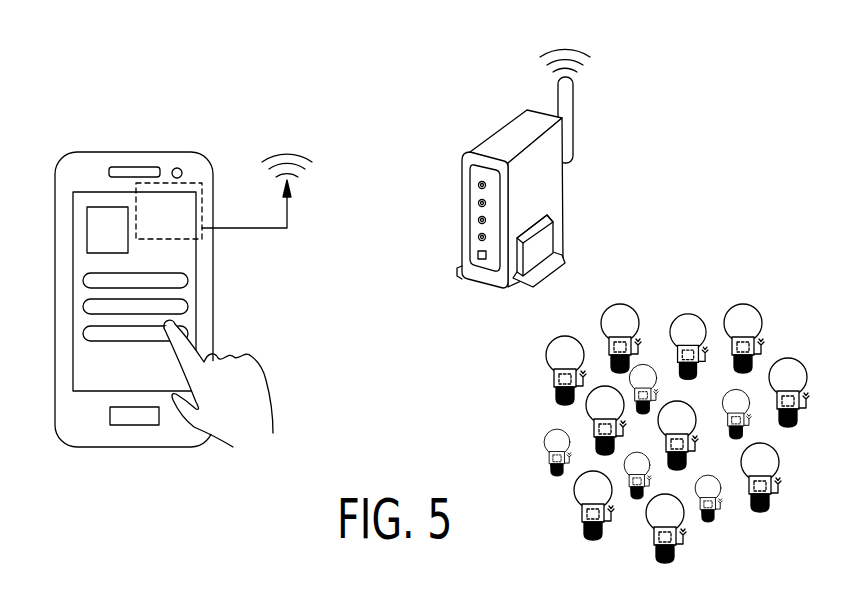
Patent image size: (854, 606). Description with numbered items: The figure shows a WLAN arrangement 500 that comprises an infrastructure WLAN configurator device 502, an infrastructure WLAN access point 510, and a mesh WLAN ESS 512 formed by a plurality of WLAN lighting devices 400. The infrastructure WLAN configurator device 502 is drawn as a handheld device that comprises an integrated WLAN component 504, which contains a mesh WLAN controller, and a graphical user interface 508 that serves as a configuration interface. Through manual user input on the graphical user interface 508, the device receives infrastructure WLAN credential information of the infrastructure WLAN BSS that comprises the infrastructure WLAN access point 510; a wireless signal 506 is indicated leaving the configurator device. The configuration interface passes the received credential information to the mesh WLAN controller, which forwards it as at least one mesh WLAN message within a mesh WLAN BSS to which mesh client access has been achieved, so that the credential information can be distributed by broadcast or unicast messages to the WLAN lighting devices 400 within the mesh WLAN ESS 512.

The WLAN lighting device 400 is at (682, 315).
The WLAN arrangement 500 is at (536, 162).
The infrastructure WLAN configurator device 502 is at (206, 258).
The integrated WLAN component 504 is at (188, 183).
The wireless signal / antenna 506 is at (287, 222).
The graphical user interface 508 is at (188, 308).
The infrastructure WLAN access point 510 is at (565, 190).
The mesh WLAN ESS 512 is at (621, 392).